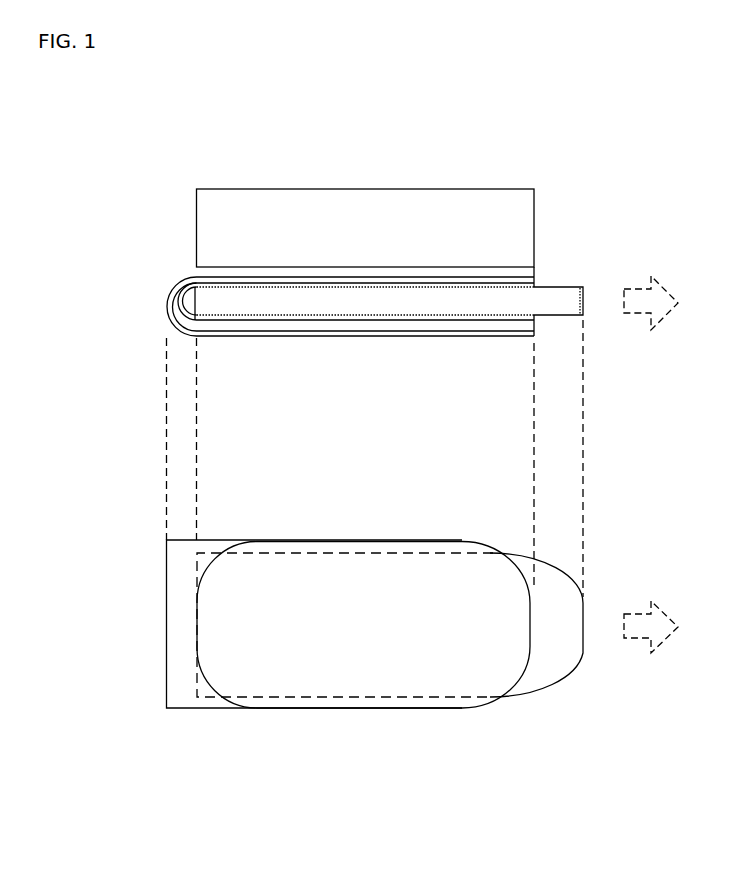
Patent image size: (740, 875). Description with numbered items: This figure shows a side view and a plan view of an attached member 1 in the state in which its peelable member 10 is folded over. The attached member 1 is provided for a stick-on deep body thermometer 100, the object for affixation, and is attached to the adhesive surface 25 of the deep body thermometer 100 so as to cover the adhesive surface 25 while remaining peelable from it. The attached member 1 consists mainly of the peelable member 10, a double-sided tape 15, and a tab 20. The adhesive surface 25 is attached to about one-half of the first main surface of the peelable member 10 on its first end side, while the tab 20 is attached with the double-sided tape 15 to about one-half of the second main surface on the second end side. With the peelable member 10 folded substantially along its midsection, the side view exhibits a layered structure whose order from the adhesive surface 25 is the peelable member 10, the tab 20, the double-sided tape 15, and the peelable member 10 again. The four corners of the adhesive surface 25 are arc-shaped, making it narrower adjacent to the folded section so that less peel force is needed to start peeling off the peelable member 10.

The attached member 1 is at (153, 284).
The stick-on deep body thermometer 100 is at (377, 202).
The peelable member 10 is at (335, 337).
The adhesive surface 25 is at (253, 274).
The double-sided tape 15 is at (420, 321).
The tab 20 is at (492, 308).